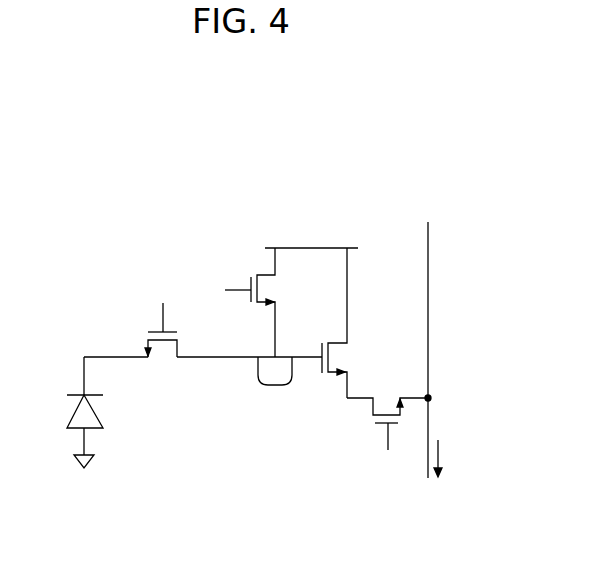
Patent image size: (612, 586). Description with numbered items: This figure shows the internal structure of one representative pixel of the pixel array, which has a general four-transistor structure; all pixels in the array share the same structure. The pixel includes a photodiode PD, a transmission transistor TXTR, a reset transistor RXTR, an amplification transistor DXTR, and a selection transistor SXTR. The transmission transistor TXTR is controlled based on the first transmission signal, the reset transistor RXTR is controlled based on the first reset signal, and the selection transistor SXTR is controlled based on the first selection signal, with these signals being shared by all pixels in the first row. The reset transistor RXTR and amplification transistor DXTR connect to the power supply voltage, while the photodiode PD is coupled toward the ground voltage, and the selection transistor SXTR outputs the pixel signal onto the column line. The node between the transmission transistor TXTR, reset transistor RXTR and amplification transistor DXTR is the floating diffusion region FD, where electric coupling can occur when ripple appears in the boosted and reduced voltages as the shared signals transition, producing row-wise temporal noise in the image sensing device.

The transmission transistor TXTR is at (162, 333).
The reset transistor RXTR is at (254, 302).
The amplification transistor DXTR is at (355, 323).
The selection transistor SXTR is at (387, 423).
The floating diffusion region FD is at (275, 371).
The photodiode PD is at (95, 427).